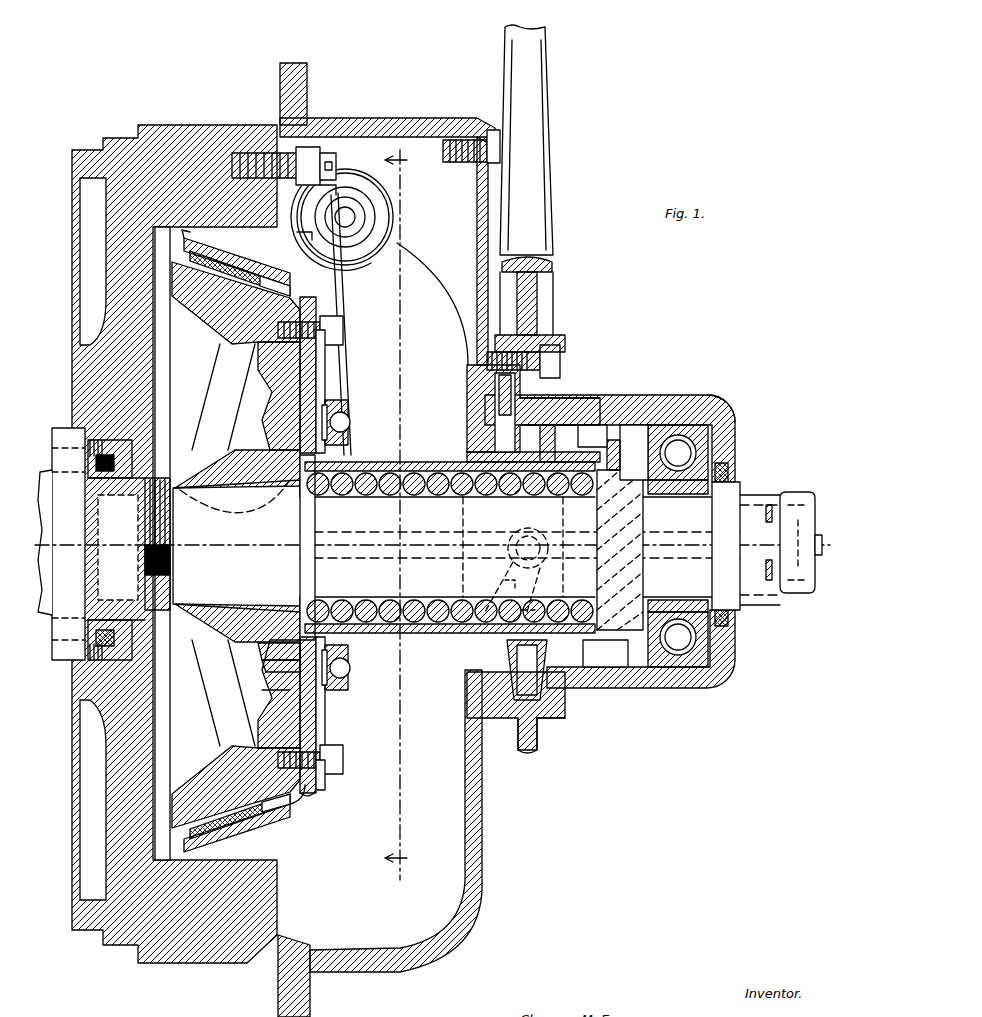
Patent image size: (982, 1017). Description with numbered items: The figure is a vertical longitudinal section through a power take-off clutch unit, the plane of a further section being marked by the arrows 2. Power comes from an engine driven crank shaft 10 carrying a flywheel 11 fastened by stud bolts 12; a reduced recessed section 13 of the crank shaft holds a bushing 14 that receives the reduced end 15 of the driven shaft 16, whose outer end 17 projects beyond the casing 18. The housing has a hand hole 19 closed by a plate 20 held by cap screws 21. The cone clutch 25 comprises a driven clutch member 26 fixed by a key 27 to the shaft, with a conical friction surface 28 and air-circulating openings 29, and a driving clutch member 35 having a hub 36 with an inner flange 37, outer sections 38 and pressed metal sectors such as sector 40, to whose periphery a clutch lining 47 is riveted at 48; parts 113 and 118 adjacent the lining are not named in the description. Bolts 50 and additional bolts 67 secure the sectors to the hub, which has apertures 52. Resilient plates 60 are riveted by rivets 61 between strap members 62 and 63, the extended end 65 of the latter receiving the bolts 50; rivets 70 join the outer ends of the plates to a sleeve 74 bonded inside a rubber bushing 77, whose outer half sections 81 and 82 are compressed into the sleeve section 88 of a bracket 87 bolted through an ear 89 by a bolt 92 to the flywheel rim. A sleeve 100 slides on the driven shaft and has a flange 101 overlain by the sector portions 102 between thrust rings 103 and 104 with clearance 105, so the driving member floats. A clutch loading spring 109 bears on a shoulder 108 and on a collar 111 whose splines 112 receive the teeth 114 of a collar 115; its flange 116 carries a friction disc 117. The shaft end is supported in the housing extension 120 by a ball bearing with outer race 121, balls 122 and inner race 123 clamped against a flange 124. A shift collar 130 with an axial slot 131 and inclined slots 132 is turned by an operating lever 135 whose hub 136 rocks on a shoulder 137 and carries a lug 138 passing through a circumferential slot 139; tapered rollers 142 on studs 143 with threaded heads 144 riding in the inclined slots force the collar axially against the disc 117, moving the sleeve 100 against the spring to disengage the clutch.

The section line 2 is at (400, 515).
The crank shaft 10 is at (43, 476).
The flywheel 11 is at (198, 125).
The stud bolts 12 is at (165, 418).
The reduced recessed section 13 is at (93, 526).
The bushing 14 is at (100, 571).
The reduced end 15 is at (110, 549).
The driven shaft 16 is at (440, 462).
The outer end 17 is at (790, 595).
The casing 18 is at (480, 868).
The hand hole 19 is at (470, 356).
The plate 20 is at (487, 245).
The cap screws 21 is at (494, 130).
The clutch 25 is at (305, 806).
The driven clutch member 26 is at (225, 790).
The key 27 is at (285, 495).
The conical friction surface 28 is at (212, 256).
The openings 29 is at (216, 402).
The driving clutch member 35 is at (268, 372).
The hub section 36 is at (325, 380).
The flange 37 is at (264, 458).
The radially outwardly disposed sections 38 is at (314, 790).
The pressed metal sector 40 is at (316, 365).
The clutch lining 47 is at (248, 820).
The rivets 48 is at (280, 812).
The bolts 50 is at (345, 755).
The apertures 52 is at (270, 708).
The resilient plates 60 is at (346, 288).
The rivets 61 is at (351, 422).
The strap member 62 is at (348, 415).
The strap member 63 is at (340, 402).
The extended end 65 is at (328, 780).
The bolts 67 is at (343, 330).
The rivets 70 is at (356, 218).
The sleeve member 74 is at (372, 198).
The rubber bushing 77 is at (365, 210).
The semi-circular section 81 is at (297, 233).
The semi-circular section 82 is at (375, 178).
The bracket 87 is at (327, 170).
The sleeve section 88 is at (398, 235).
The ear 89 is at (305, 148).
The attaching bolt 92 is at (325, 152).
The sleeve member 100 is at (460, 458).
The flange 101 is at (268, 650).
The radially inner portions 102 is at (330, 466).
The thrust ring 103 is at (275, 666).
The thrust ring 104 is at (316, 646).
The clearance 105 is at (280, 685).
The shoulder 108 is at (335, 497).
The clutch loading spring 109 is at (482, 495).
The collar 111 is at (640, 488).
The external splines 112 is at (598, 508).
The friction facing 113 is at (243, 270).
The teeth 114 is at (632, 430).
The collar 115 is at (615, 440).
The flange 116 is at (600, 430).
The friction disc 117 is at (575, 420).
The facing end 118 is at (275, 282).
The housing extension 120 is at (698, 395).
The outer race 121 is at (712, 410).
The balls 122 is at (692, 448).
The inner race 123 is at (722, 470).
The flange 124 is at (730, 480).
The collar 130 is at (470, 412).
The axially extending slot 131 is at (558, 410).
The inclined slots 132 is at (545, 578).
The operating lever 135 is at (540, 115).
The hub section 136 is at (535, 735).
The shoulder 137 is at (555, 372).
The lug 138 is at (495, 400).
The circumferentially directed slot 139 is at (500, 385).
The tapered rollers 142 is at (533, 530).
The studs 143 is at (508, 548).
The threaded head 144 is at (548, 716).